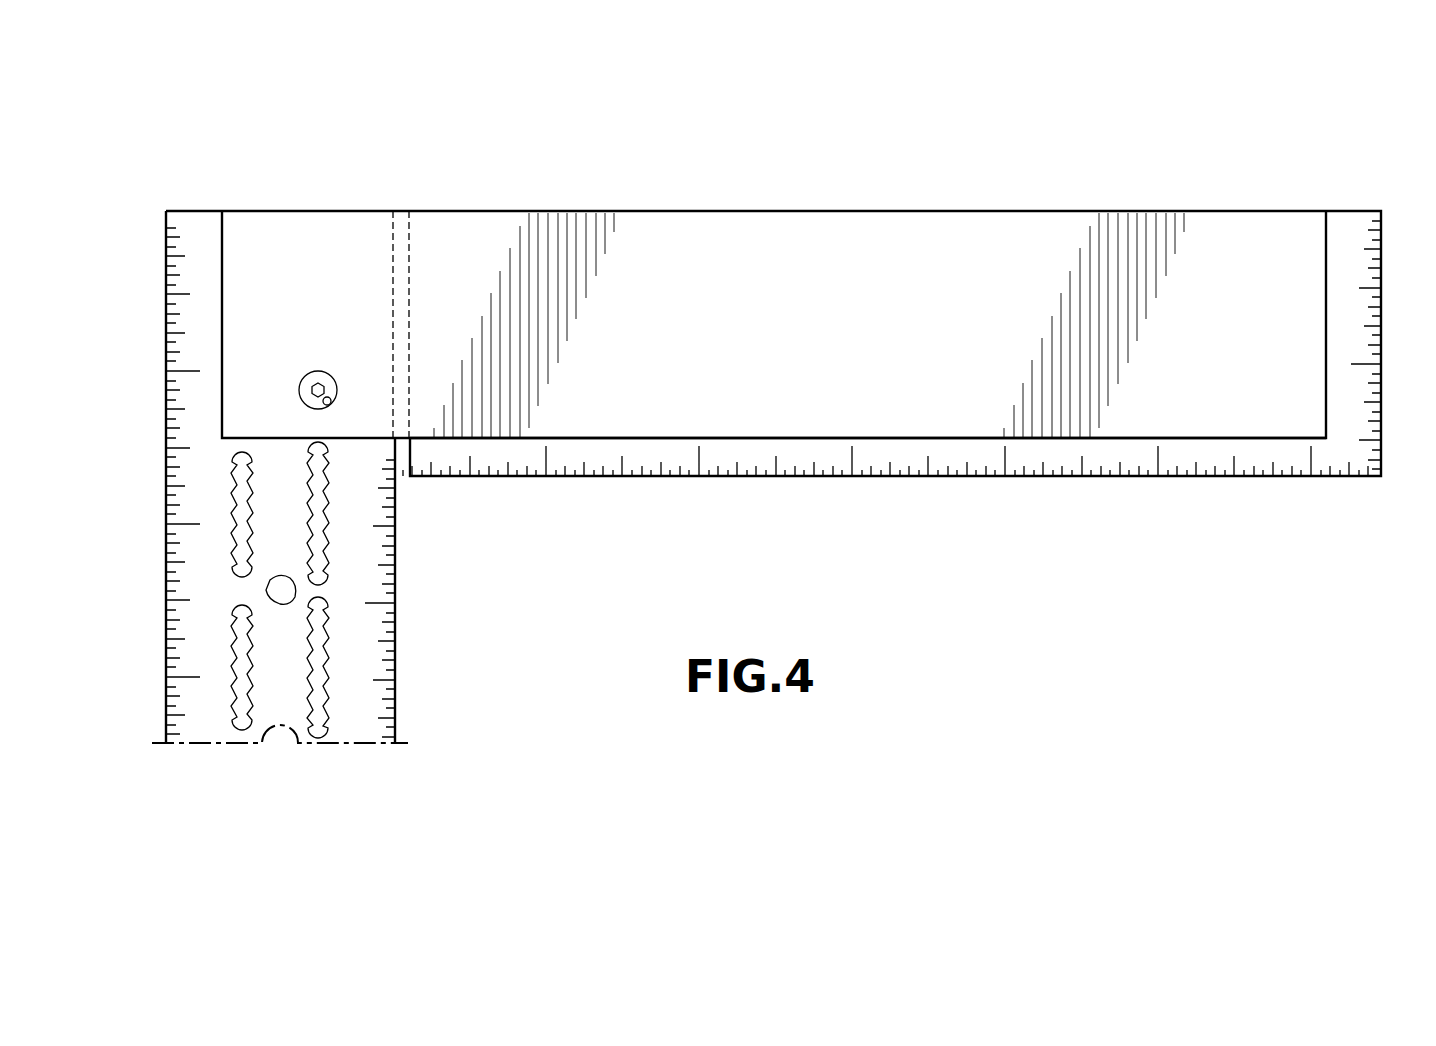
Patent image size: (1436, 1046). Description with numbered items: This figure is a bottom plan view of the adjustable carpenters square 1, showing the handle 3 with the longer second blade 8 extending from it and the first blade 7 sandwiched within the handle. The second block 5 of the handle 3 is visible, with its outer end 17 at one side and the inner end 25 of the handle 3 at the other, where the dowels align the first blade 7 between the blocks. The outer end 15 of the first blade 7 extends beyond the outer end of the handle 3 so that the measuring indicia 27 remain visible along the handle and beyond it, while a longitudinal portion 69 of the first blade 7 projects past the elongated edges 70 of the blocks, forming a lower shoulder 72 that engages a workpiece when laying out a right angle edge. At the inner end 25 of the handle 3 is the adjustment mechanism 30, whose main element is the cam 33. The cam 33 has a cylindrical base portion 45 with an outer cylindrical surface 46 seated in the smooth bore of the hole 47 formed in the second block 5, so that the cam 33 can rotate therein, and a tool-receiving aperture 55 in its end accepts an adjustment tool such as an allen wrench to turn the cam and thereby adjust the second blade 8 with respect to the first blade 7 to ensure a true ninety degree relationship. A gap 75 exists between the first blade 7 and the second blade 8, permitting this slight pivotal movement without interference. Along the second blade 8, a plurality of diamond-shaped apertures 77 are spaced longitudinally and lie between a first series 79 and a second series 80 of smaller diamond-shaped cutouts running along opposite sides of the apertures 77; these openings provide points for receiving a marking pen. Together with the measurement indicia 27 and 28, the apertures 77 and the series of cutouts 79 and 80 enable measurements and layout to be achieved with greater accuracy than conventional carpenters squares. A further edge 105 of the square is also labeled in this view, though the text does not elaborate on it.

The adjustable carpenters square 1 is at (546, 126).
The handle 3 is at (930, 196).
The second block 5 is at (798, 246).
The first blade 7 is at (1133, 480).
The second blade 8 is at (402, 670).
The outer end of blade 7 15 is at (1390, 449).
The outer end of handle block 5 17 is at (1294, 240).
The inner end of handle 25 is at (219, 238).
The measuring indicia 27 is at (660, 463).
The measurement indicia 28 is at (174, 575).
The adjustment mechanism 30 is at (310, 333).
The cam 33 is at (305, 406).
The cylindrical base portion 45 is at (329, 349).
The outer cylindrical surface 46 is at (333, 369).
The hole 47 is at (327, 404).
The tool-receiving aperture 55 is at (313, 386).
The longitudinal portion of blade 7 69 is at (948, 446).
The elongated edges of blocks 70 is at (868, 499).
The lower shoulder 72 is at (822, 438).
The gap 75 is at (403, 455).
The diamond-shaped apertures 77 is at (273, 589).
The first series of cutouts 79 is at (324, 660).
The second series of cutouts 80 is at (240, 644).
The side edge 105 is at (397, 527).